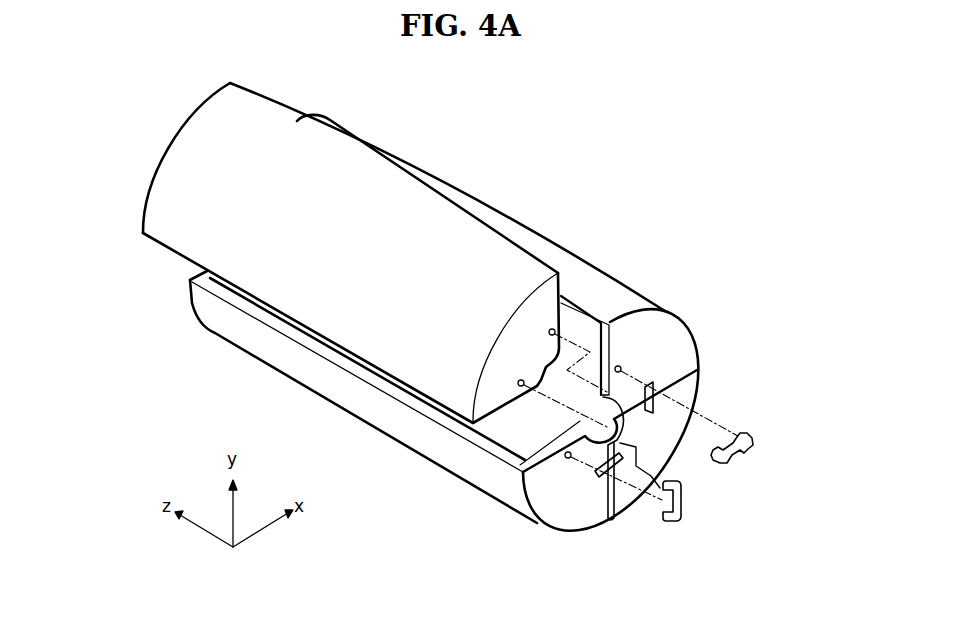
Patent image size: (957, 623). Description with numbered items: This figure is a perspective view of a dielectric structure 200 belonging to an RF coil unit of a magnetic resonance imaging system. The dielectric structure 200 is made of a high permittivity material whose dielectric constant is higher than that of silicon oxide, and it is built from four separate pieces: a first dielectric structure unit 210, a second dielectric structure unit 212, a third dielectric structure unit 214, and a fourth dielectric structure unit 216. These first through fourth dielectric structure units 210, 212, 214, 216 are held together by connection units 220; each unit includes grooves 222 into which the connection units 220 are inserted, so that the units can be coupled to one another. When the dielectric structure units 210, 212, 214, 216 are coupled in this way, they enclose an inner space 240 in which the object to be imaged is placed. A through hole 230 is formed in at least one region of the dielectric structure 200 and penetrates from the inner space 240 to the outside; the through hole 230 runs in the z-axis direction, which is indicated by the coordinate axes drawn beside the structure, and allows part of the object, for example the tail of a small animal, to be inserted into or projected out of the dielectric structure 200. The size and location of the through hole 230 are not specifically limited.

The dielectric structure 200 is at (677, 128).
The first dielectric structure unit 210 is at (672, 340).
The second dielectric structure unit 212 is at (665, 450).
The third dielectric structure unit 214 is at (565, 508).
The fourth dielectric structure unit 216 is at (398, 200).
The connection units 220 is at (741, 433).
The grooves 222 is at (621, 368).
The through hole 230 is at (626, 500).
The inner space 240 is at (517, 432).